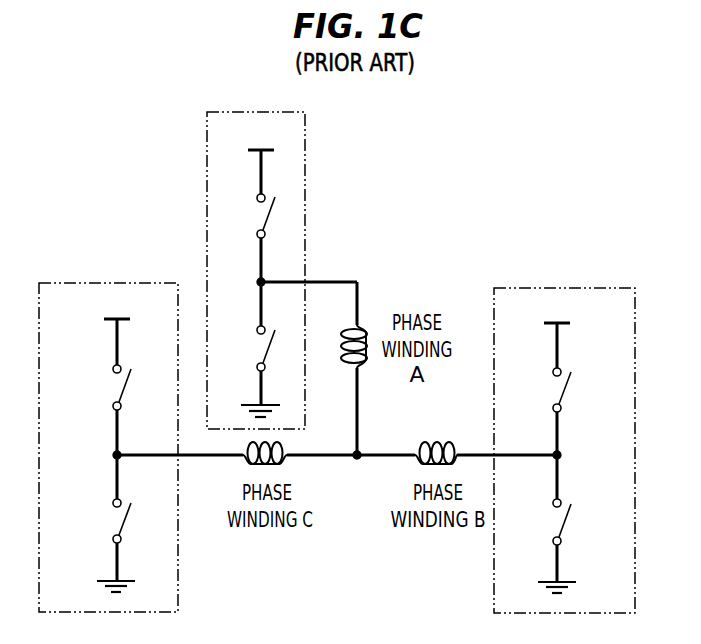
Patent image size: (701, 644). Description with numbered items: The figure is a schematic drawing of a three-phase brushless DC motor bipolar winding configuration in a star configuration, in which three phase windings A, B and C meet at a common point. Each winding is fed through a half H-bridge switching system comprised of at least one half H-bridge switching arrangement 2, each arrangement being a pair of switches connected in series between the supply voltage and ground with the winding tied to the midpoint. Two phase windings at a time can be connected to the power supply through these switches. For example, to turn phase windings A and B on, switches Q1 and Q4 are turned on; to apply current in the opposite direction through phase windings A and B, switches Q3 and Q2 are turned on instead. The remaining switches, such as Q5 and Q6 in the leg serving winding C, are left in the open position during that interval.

The half H-bridge switching arrangement 2 is at (305, 128).
The switch Q1 is at (254, 216).
The switch Q2 is at (254, 348).
The switch Q3 is at (550, 390).
The switch Q4 is at (550, 522).
The switch Q5 is at (109, 387).
The switch Q6 is at (109, 521).